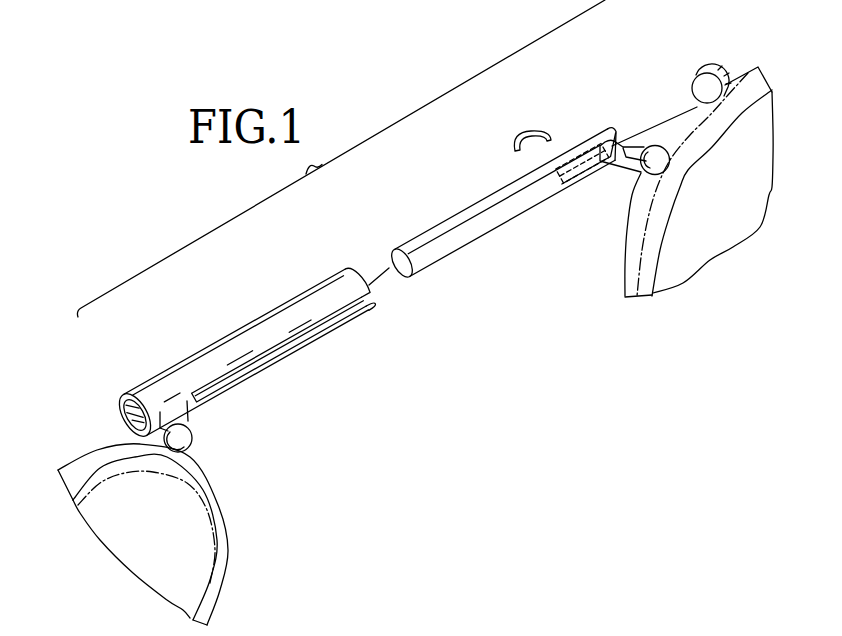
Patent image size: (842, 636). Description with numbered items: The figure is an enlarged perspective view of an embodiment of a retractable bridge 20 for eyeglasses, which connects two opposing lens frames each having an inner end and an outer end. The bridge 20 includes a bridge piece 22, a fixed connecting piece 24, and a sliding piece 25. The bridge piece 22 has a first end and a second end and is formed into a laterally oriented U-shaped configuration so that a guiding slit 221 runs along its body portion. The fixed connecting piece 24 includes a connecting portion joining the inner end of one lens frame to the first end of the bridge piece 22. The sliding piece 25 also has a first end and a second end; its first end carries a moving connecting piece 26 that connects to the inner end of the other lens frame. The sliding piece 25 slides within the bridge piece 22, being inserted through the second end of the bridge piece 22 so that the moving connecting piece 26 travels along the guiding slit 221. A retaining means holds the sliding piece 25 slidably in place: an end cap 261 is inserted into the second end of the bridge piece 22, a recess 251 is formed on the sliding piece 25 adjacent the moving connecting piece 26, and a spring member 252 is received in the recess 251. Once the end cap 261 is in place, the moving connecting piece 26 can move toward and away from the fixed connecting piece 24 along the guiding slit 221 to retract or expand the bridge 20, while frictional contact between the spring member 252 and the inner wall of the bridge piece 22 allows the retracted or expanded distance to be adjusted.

The retractable bridge 20 is at (462, 373).
The bridge piece 22 is at (260, 323).
The guiding slit 221 is at (313, 338).
The fixed connecting piece 24 is at (194, 436).
The sliding piece 25 is at (480, 234).
The recess 251 is at (571, 147).
The spring member 252 is at (537, 132).
The moving connecting piece 26 is at (628, 177).
The end cap 261 is at (700, 70).